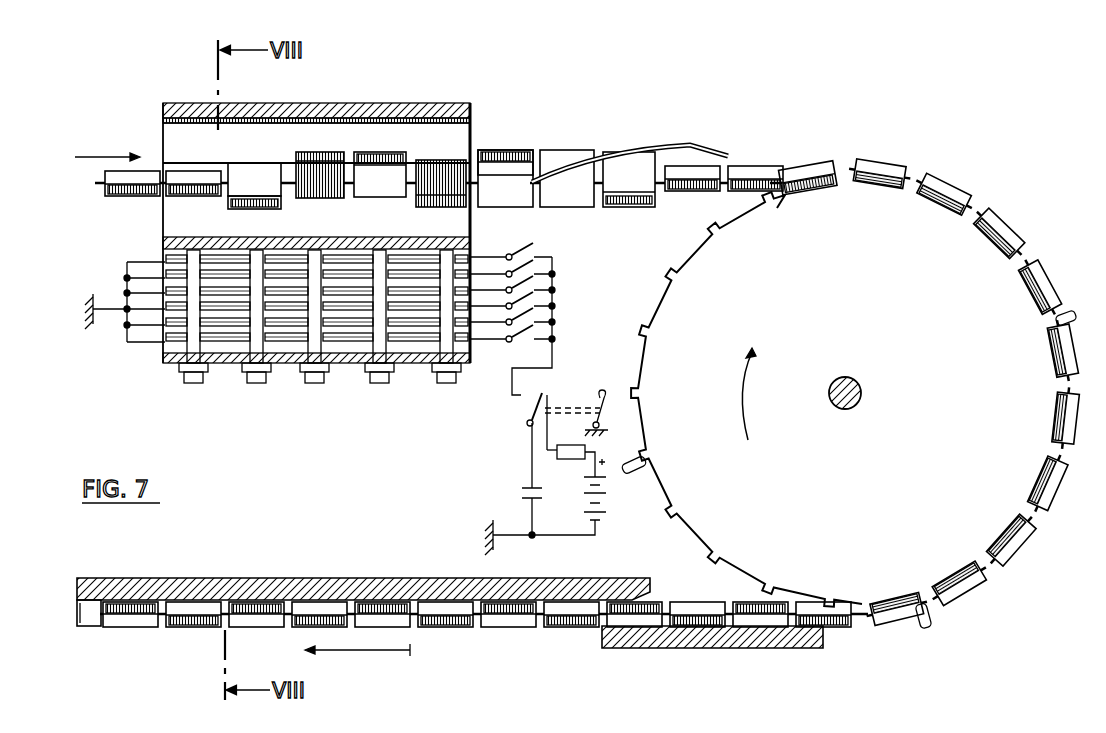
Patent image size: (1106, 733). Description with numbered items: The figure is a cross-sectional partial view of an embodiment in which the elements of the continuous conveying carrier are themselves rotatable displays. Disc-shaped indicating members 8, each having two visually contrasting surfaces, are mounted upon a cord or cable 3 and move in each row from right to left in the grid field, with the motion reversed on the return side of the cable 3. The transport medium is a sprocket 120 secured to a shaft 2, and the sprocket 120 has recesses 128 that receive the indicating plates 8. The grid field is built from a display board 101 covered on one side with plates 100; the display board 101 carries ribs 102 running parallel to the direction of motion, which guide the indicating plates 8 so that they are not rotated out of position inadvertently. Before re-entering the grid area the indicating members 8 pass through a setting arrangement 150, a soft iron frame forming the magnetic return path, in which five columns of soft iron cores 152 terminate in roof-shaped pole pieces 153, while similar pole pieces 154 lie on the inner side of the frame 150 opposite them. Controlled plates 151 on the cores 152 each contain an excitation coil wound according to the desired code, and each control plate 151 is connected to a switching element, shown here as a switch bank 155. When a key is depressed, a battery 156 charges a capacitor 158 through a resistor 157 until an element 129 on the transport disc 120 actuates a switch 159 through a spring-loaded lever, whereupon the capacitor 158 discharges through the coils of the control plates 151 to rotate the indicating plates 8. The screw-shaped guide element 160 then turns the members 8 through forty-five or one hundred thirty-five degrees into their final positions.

The shaft 2 is at (848, 377).
The cord or cable 3 is at (102, 186).
The indicating members 8 is at (130, 188).
The plates 100 is at (712, 653).
The display board 101 is at (94, 591).
The ribs 102 is at (88, 619).
The sprocket 120 is at (866, 491).
The recesses 128 is at (641, 341).
The element 129 is at (1066, 314).
The setting arrangement 150 is at (372, 107).
The controlled plates 151 is at (293, 345).
The soft iron cores 152 is at (382, 355).
The pole pieces 153 is at (392, 227).
The pole pieces 154 is at (433, 135).
The switch bank 155 is at (520, 342).
The battery 156 is at (607, 516).
The resistor 157 is at (570, 455).
The capacitor 158 is at (520, 494).
The switch 159 is at (574, 411).
The guide element 160 is at (684, 146).